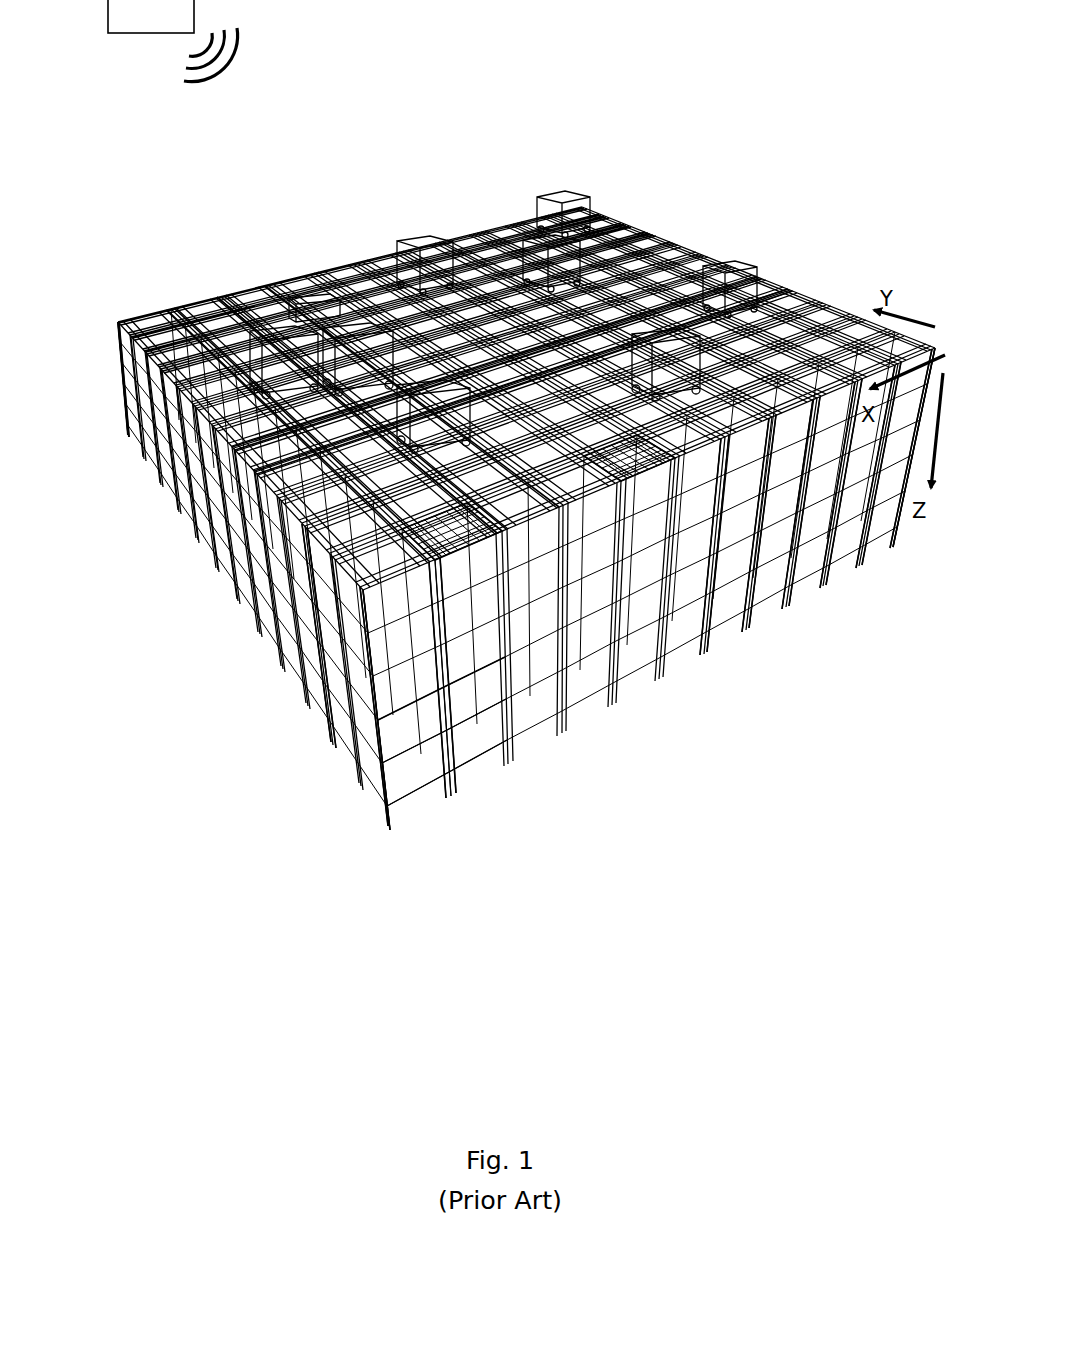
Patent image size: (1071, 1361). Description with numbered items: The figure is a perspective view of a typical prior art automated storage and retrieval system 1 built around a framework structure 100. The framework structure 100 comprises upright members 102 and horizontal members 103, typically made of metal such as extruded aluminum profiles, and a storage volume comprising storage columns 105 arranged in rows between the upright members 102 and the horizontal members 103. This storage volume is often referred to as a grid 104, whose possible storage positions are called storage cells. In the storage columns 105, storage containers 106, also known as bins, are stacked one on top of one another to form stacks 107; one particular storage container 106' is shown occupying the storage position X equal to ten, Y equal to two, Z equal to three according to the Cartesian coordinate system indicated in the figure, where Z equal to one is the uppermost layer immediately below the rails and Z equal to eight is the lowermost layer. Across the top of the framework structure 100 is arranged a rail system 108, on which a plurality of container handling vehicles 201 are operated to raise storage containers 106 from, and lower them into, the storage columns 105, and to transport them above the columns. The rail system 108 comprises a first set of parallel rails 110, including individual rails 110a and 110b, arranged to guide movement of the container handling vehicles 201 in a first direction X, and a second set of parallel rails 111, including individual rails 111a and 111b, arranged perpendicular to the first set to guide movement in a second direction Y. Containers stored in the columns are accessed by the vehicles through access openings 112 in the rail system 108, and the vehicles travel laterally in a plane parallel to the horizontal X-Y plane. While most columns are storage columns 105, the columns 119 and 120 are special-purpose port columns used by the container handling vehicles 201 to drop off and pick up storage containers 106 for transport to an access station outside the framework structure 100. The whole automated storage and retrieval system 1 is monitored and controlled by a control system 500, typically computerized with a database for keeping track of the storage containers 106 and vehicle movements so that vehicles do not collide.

The automated storage and retrieval system 1 is at (464, 106).
The framework structure 100 is at (124, 492).
The upright members 102 is at (375, 706).
The horizontal members 103 is at (735, 545).
The grid 104 is at (117, 322).
The storage columns 105 is at (296, 601).
The storage containers 106 is at (512, 794).
The storage container 106' is at (523, 698).
The stacks 107 is at (800, 585).
The rail system 108 is at (862, 318).
The first set of parallel rails 110 is at (280, 440).
The first rail of first set 110a is at (256, 300).
The second rail of first set 110b is at (276, 297).
The second set of parallel rails 111 is at (372, 262).
The first rail of second set 111a is at (220, 300).
The second rail of second set 111b is at (275, 292).
The access openings 112 is at (607, 242).
The port column 119 is at (458, 540).
The port column 120 is at (628, 472).
The container handling vehicle 201 is at (588, 208).
The control system 500 is at (173, 41).